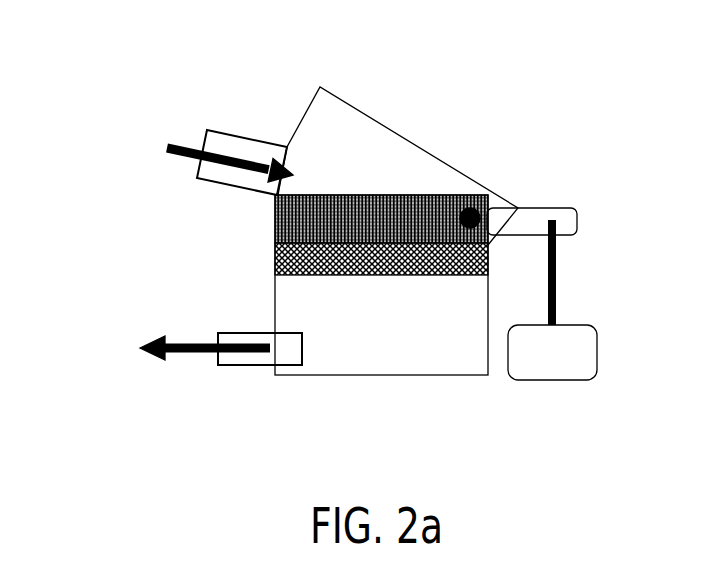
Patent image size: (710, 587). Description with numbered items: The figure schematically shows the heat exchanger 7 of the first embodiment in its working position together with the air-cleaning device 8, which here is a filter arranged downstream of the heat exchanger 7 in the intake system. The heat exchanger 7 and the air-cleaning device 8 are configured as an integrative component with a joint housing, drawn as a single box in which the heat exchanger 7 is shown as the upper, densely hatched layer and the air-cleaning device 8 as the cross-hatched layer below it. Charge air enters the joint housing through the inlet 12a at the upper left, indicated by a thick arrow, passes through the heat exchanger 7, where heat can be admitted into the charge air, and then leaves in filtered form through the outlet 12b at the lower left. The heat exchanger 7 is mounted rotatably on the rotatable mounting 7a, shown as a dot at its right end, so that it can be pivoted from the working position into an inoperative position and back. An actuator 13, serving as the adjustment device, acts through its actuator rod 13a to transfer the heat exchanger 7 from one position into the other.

The heat exchanger 7 is at (277, 220).
The rotatable mounting 7a is at (495, 205).
The air-cleaning device 8 is at (277, 257).
The inlet 12a is at (212, 131).
The outlet 12b is at (242, 367).
The actuator 13 is at (552, 352).
The actuator rod 13a is at (555, 308).